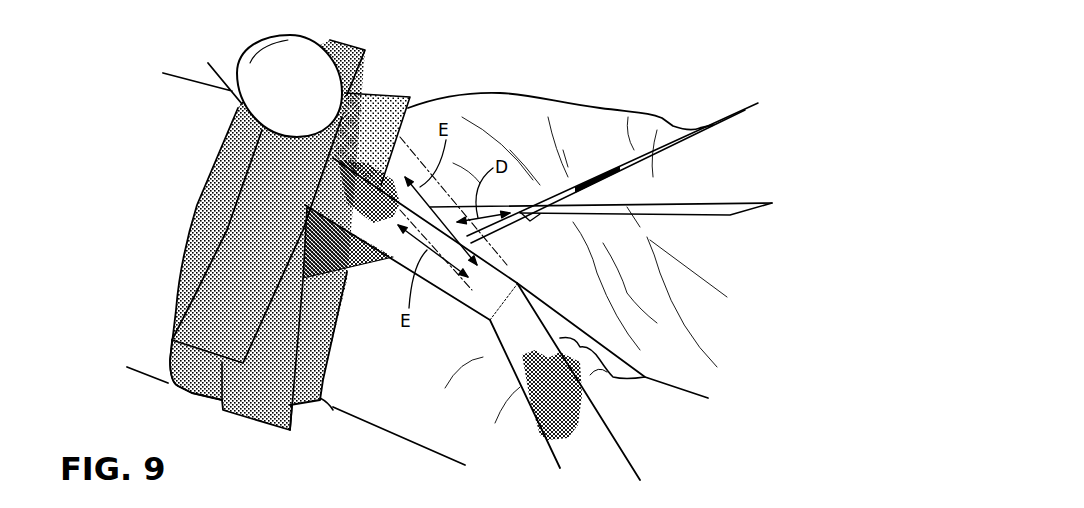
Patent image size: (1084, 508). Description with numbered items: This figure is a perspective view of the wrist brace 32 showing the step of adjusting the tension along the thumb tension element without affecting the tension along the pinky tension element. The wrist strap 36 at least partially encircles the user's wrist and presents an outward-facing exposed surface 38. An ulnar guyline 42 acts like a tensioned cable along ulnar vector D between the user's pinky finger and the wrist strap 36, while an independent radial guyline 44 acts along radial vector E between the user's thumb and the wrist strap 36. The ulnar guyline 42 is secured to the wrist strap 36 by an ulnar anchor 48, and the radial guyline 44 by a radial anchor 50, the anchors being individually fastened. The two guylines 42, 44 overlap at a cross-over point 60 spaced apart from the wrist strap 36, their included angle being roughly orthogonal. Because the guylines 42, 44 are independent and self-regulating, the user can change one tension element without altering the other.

The wrist brace 32 is at (155, 142).
The wrist strap 36 is at (188, 204).
The exposed surface 38 is at (190, 395).
The ulnar guyline 42 is at (596, 163).
The radial guyline 44 is at (505, 370).
The ulnar anchor 48 is at (260, 423).
The radial anchor 50 is at (238, 193).
The cross-over point 60 is at (468, 236).